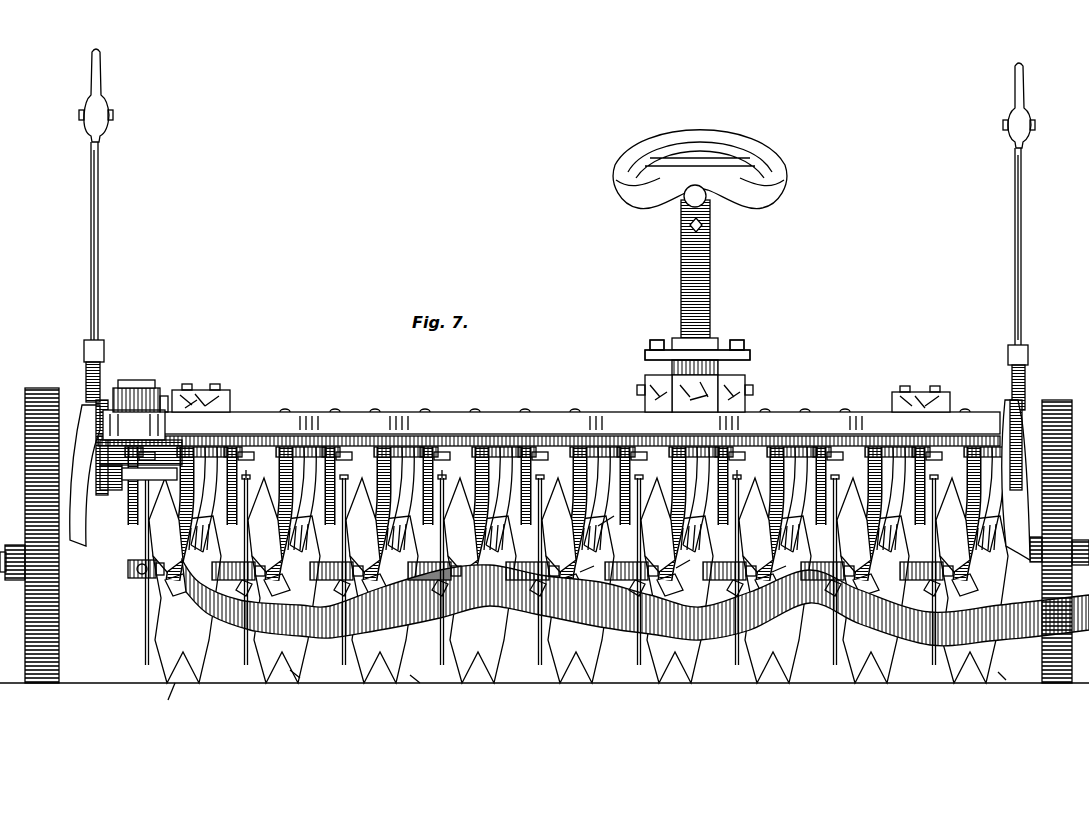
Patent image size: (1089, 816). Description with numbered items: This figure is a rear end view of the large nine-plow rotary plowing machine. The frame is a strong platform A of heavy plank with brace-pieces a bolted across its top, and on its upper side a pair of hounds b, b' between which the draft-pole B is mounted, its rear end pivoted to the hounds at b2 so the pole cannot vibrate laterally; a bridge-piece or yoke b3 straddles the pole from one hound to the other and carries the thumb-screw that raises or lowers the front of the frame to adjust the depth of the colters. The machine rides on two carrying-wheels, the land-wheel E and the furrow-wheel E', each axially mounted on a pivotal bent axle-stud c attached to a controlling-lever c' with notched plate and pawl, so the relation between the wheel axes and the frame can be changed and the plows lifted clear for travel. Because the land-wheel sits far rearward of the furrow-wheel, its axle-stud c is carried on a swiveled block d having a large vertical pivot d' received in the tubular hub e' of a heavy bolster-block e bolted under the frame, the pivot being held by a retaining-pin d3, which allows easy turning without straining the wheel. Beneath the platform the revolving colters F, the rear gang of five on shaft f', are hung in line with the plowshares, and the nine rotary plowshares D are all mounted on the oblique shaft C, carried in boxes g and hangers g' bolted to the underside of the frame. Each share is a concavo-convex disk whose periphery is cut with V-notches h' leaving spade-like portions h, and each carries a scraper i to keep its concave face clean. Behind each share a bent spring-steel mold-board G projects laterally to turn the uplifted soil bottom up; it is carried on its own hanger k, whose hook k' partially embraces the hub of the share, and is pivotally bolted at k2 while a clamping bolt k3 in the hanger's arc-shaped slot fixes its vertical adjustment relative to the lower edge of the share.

The platform A is at (556, 434).
The draft-pole B is at (700, 271).
The shaft C is at (136, 578).
The rotary plowshare D is at (580, 599).
The land-wheel E is at (29, 535).
The furrow-wheel E' is at (1059, 530).
The revolving colter F is at (540, 573).
The mold-board G is at (635, 603).
The brace-piece a is at (561, 394).
The hound b is at (645, 387).
The hound b' is at (746, 385).
The pivot b2 is at (637, 390).
The bridge-piece or yoke b3 is at (715, 340).
The bent axle-stud c is at (550, 492).
The controlling-lever c' is at (557, 229).
The swiveled block d is at (141, 465).
The vertical pivot d' is at (136, 387).
The retaining-pin d3 is at (134, 384).
The bolster-block e is at (134, 425).
The tubular hub e' is at (172, 387).
The colter shaft f' is at (123, 568).
The box g is at (582, 571).
The hanger g' is at (495, 464).
The spade-like portion h is at (282, 679).
The notch h' is at (650, 684).
The scraper i is at (318, 462).
The mold-board hanger k is at (559, 525).
The hook k' is at (613, 513).
The pivot bolt k2 is at (691, 557).
The clamping bolt k3 is at (691, 561).